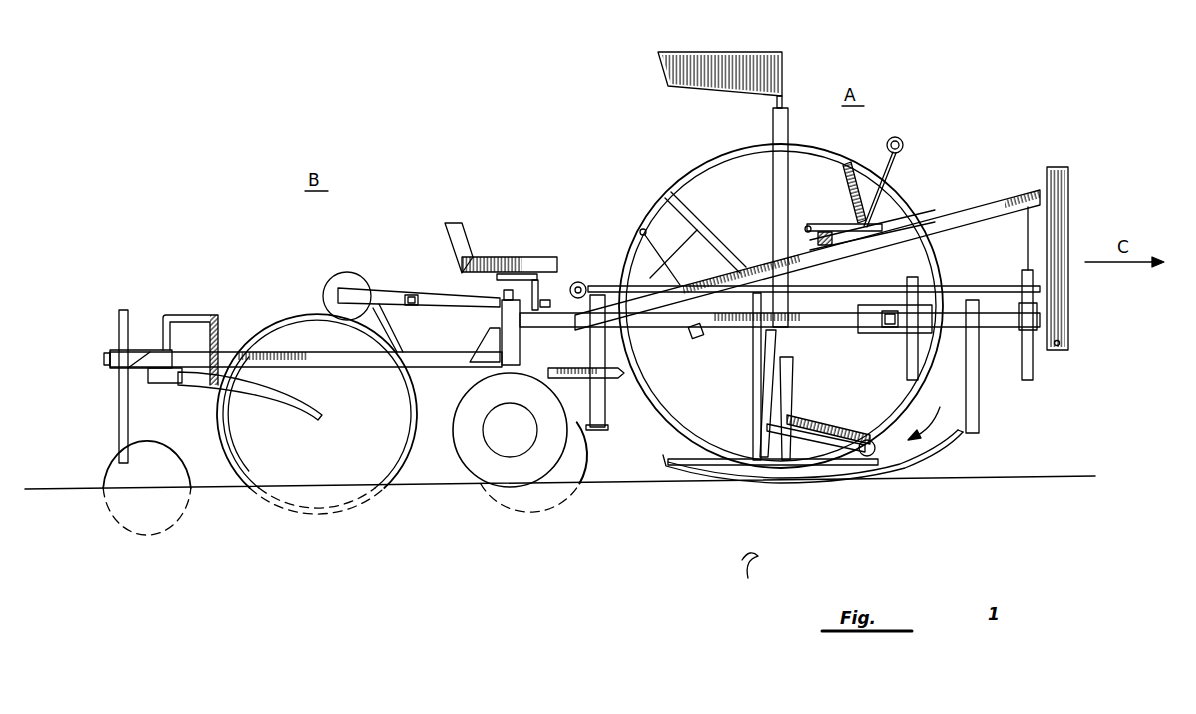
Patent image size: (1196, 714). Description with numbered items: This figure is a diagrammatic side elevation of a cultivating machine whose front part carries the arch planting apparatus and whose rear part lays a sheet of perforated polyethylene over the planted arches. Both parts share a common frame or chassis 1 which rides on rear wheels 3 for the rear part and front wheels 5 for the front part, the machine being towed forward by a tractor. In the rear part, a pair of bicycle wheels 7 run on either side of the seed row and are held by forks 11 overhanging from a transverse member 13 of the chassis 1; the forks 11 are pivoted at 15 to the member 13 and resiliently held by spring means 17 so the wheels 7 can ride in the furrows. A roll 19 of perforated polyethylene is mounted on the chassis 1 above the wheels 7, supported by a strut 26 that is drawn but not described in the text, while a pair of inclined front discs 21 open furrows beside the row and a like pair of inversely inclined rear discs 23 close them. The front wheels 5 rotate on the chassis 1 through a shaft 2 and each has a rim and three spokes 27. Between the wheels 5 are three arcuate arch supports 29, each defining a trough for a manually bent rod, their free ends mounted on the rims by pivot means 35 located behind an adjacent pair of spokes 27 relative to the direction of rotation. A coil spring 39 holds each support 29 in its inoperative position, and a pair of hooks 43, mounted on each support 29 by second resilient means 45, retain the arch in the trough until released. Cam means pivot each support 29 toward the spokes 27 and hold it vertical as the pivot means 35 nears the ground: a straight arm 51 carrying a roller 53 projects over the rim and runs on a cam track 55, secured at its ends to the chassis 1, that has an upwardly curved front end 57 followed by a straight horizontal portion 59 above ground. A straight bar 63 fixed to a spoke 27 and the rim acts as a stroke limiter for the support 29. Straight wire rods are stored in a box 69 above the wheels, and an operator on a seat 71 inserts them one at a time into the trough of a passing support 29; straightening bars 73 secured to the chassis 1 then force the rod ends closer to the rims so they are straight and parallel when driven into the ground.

The frame or chassis 1 is at (231, 347).
The shaft 2 is at (760, 330).
The rear wheels 3 is at (540, 386).
The front wheels 5 is at (912, 189).
The bicycle wheels 7 is at (278, 318).
The forks 11 is at (257, 390).
The transverse member 13 is at (152, 358).
The pivot 15 is at (176, 384).
The spring means 17 is at (200, 298).
The roll of polyethylene perforated material 19 is at (347, 272).
The inclined front discs 21 is at (547, 504).
The inversely inclined rear discs 23 is at (178, 520).
The strut 26 is at (393, 331).
The spokes 27 is at (715, 240).
The arcuate arch supports 29 is at (866, 246).
The pivot means 35 is at (647, 243).
The coil spring 39 is at (847, 173).
The hooks 43 is at (820, 226).
The second resilient means 45 is at (807, 237).
The straight arm 51 is at (604, 290).
The roller 53 is at (578, 282).
The cam member or track 55 is at (673, 470).
The upwardly curved front end 57 is at (940, 452).
The straight horizontal portion 59 is at (808, 466).
The straight bar 63 is at (845, 500).
The box 69 is at (792, 72).
The seat 71 is at (490, 257).
The straightening bars 73 is at (885, 403).